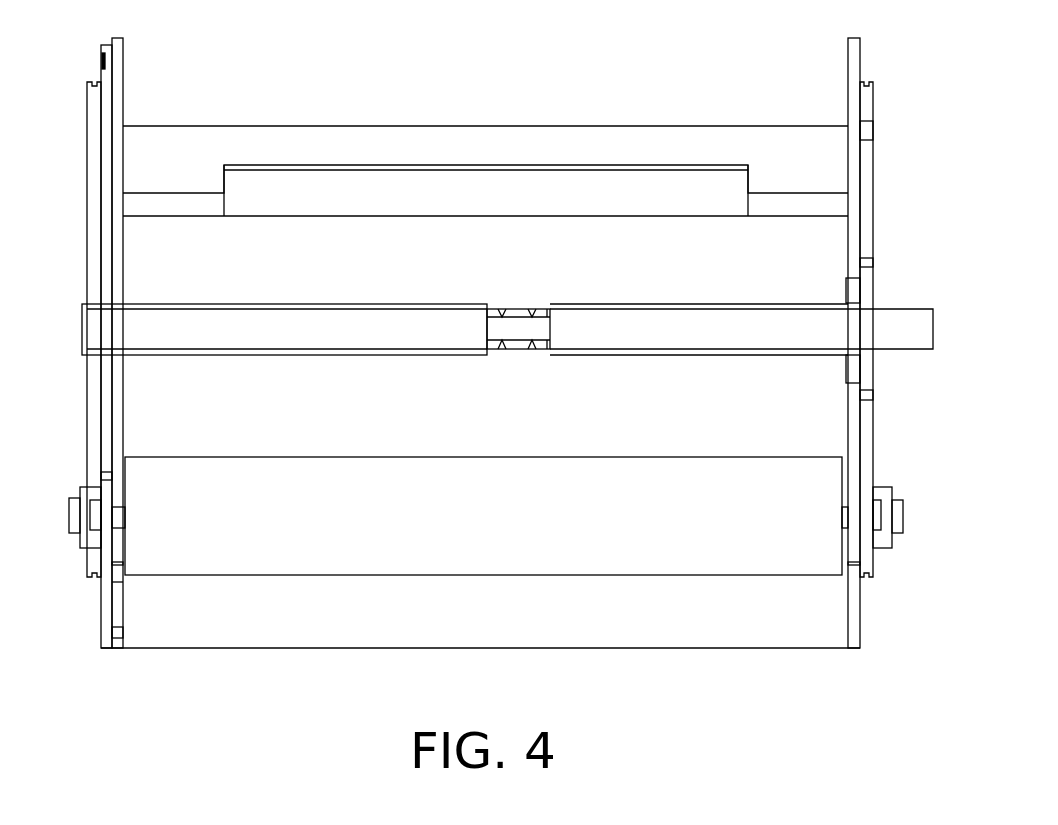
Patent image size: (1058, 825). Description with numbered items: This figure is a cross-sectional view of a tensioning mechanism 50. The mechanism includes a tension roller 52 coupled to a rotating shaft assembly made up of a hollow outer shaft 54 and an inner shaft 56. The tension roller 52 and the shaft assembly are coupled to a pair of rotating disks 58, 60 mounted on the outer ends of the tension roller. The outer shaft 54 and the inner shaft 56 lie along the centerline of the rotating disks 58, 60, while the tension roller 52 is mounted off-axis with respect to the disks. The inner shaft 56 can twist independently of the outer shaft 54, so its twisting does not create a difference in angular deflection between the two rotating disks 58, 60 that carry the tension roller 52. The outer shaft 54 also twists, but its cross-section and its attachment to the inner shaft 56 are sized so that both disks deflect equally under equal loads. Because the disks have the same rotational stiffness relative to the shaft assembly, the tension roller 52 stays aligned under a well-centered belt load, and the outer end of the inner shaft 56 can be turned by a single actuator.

The tensioning mechanism 50 is at (910, 286).
The tension roller 52 is at (311, 517).
The hollow outer shaft 54 is at (374, 323).
The inner shaft 56 is at (712, 323).
The rotating disk 58 is at (92, 390).
The rotating disk 60 is at (866, 442).